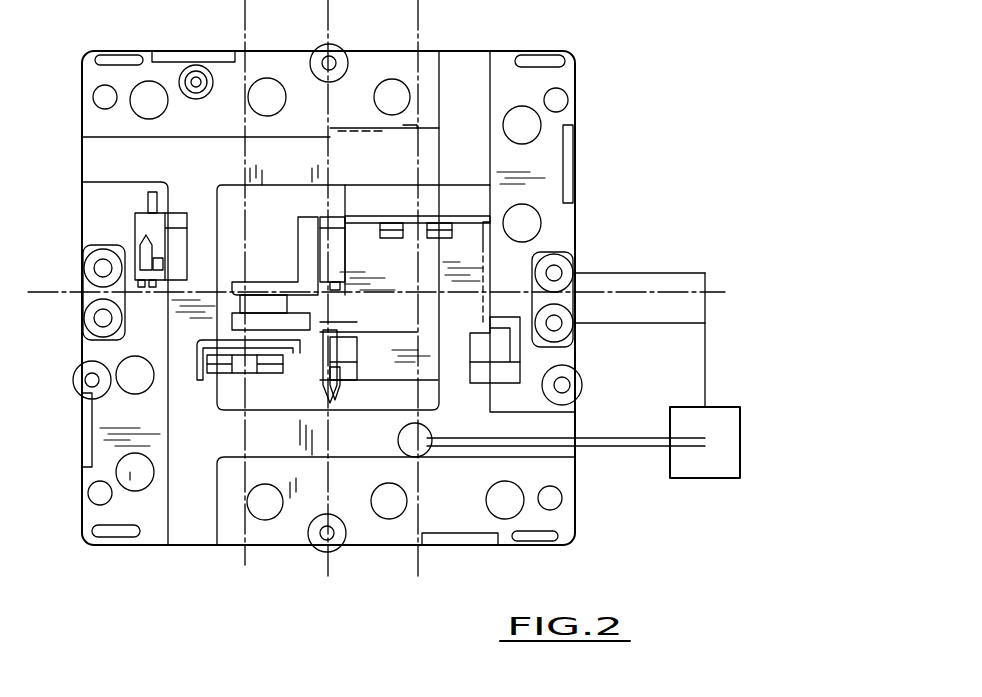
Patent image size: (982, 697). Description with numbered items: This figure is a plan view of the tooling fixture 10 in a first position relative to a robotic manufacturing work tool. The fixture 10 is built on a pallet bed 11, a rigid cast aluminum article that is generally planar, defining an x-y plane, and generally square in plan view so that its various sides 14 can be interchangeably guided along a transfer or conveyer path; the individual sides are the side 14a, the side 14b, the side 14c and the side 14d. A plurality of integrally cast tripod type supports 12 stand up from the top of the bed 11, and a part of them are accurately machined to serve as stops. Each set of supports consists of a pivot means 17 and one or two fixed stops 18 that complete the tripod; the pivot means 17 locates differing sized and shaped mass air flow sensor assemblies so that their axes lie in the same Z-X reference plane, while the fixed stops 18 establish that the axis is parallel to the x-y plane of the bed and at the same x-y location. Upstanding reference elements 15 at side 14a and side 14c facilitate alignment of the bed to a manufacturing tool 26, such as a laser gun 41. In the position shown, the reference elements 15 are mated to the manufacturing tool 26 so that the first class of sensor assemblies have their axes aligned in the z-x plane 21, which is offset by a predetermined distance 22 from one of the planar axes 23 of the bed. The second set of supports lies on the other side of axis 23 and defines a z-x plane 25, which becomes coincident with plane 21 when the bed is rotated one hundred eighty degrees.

The tooling fixture 10 is at (590, 94).
The pallet bed 11 is at (570, 76).
The tripod type supports 12 is at (268, 355).
The sides 14 is at (78, 452).
The side 14a is at (577, 234).
The side 14b is at (392, 549).
The side 14c is at (82, 210).
The side 14d is at (382, 33).
The reference elements 15 is at (557, 320).
The pivot means 17 is at (150, 204).
The fixed stops 18 is at (446, 219).
The z-x plane 21 is at (420, 43).
The predetermined distance 22 is at (365, 132).
The planar axis 23 is at (327, 32).
The z-x plane 25 is at (243, 557).
The manufacturing tool 26 is at (727, 407).
The laser gun 41 is at (428, 432).